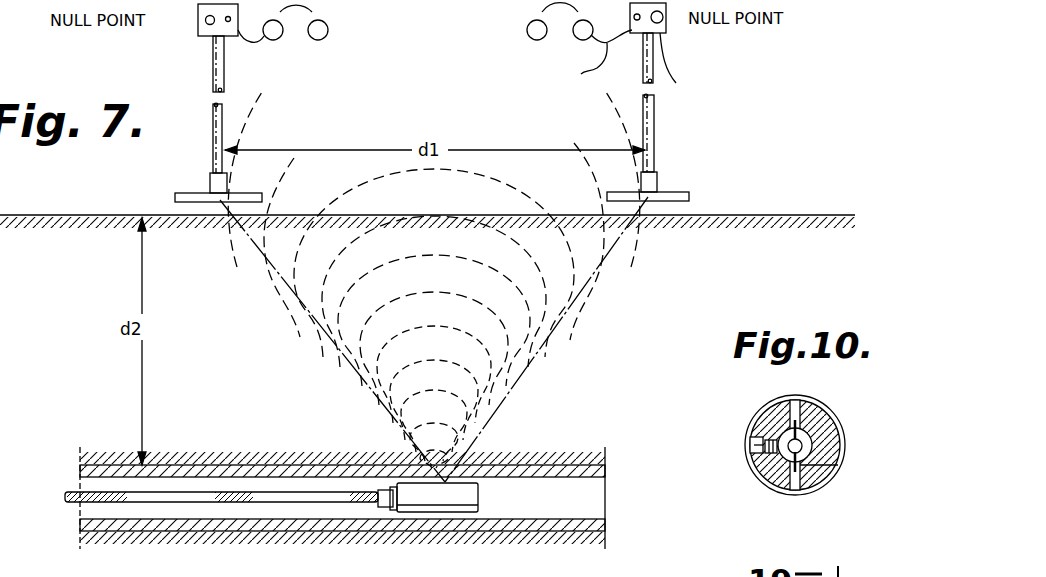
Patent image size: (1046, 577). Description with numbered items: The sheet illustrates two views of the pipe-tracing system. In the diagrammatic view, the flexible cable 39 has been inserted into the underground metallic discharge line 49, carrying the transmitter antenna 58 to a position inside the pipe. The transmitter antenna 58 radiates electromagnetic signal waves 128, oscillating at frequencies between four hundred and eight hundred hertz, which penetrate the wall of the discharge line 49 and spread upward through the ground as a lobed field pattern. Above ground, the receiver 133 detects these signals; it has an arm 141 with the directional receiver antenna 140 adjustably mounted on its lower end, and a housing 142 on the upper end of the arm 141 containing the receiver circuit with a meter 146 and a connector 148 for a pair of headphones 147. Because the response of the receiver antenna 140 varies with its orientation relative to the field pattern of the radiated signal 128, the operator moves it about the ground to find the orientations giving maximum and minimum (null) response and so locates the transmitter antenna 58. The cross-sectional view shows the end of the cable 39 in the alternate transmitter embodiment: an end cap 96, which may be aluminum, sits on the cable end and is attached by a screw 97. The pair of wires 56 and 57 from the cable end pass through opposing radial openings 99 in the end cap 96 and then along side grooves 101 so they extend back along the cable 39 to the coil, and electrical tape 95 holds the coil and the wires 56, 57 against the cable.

In FIG. 7, the cable 39 is at (314, 496).
In FIG. 7, the metallic discharge line 49 is at (223, 458).
In FIG. 7, the transmitter antenna 58 is at (447, 512).
In FIG. 7, the electromagnetic signal waves 128 is at (598, 298).
In FIG. 7, the receiver 133 is at (660, 120).
In FIG. 7, the receiver antenna 140 is at (690, 193).
In FIG. 7, the arm 141 is at (655, 148).
In FIG. 7, the housing 142 is at (688, 65).
In FIG. 7, the meter 146 is at (667, 22).
In FIG. 7, the headphones 147 is at (530, 26).
In FIG. 7, the connector 148 is at (588, 60).
In FIG. 10, the wire 56 is at (801, 420).
In FIG. 10, the wire 57 is at (823, 467).
In FIG. 10, the electrical tape 95 is at (842, 443).
In FIG. 10, the end cap 96 is at (744, 488).
In FIG. 10, the screw 97 is at (749, 447).
In FIG. 10, the radial openings 99 is at (790, 423).
In FIG. 10, the side grooves 101 is at (793, 400).